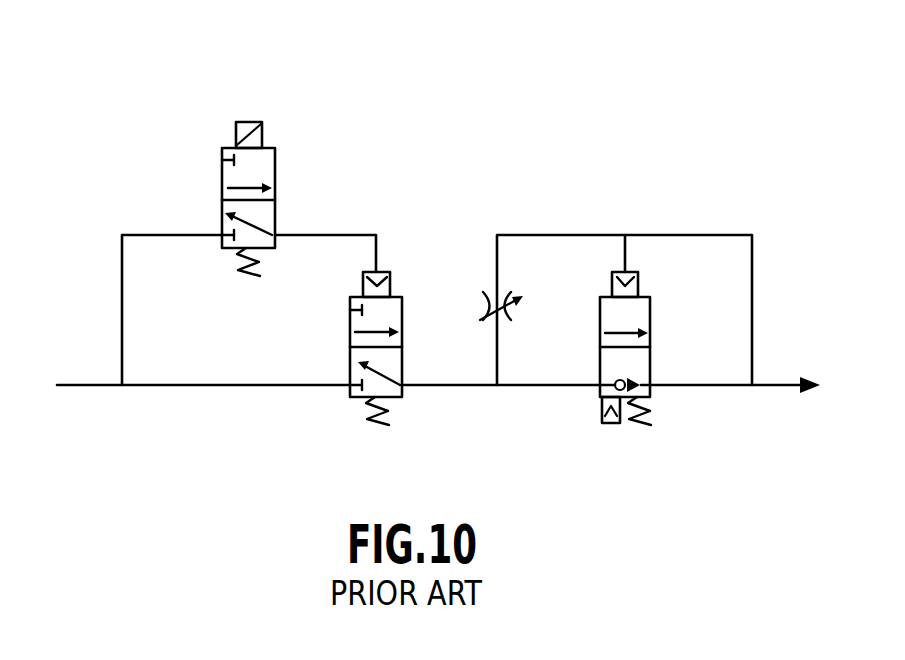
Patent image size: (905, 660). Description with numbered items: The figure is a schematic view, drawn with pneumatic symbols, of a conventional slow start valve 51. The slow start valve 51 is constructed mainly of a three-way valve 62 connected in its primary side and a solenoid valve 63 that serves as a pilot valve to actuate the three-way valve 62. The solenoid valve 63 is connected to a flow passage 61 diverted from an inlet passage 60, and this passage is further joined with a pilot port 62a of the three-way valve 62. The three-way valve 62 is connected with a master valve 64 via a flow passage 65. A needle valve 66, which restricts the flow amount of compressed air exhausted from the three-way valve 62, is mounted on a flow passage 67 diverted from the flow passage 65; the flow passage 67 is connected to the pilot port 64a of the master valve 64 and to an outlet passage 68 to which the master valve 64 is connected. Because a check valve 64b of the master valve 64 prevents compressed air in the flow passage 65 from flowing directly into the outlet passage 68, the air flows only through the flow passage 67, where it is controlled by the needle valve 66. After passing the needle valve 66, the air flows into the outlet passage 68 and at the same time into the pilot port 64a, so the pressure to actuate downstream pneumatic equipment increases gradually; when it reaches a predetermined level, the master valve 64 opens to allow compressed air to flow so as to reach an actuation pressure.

The slow start valve 51 is at (442, 108).
The inlet passage 60 is at (87, 386).
The flow passage 61 is at (121, 292).
The three-way valve 62 is at (350, 335).
The pilot port 62a is at (390, 295).
The solenoid valve 63 is at (276, 168).
The master valve 64 is at (651, 305).
The pilot port 64a is at (638, 295).
The check valve 64b is at (617, 389).
The flow passage 65 is at (468, 388).
The needle valve 66 is at (481, 302).
The flow passage 67 is at (497, 258).
The outlet passage 68 is at (777, 388).